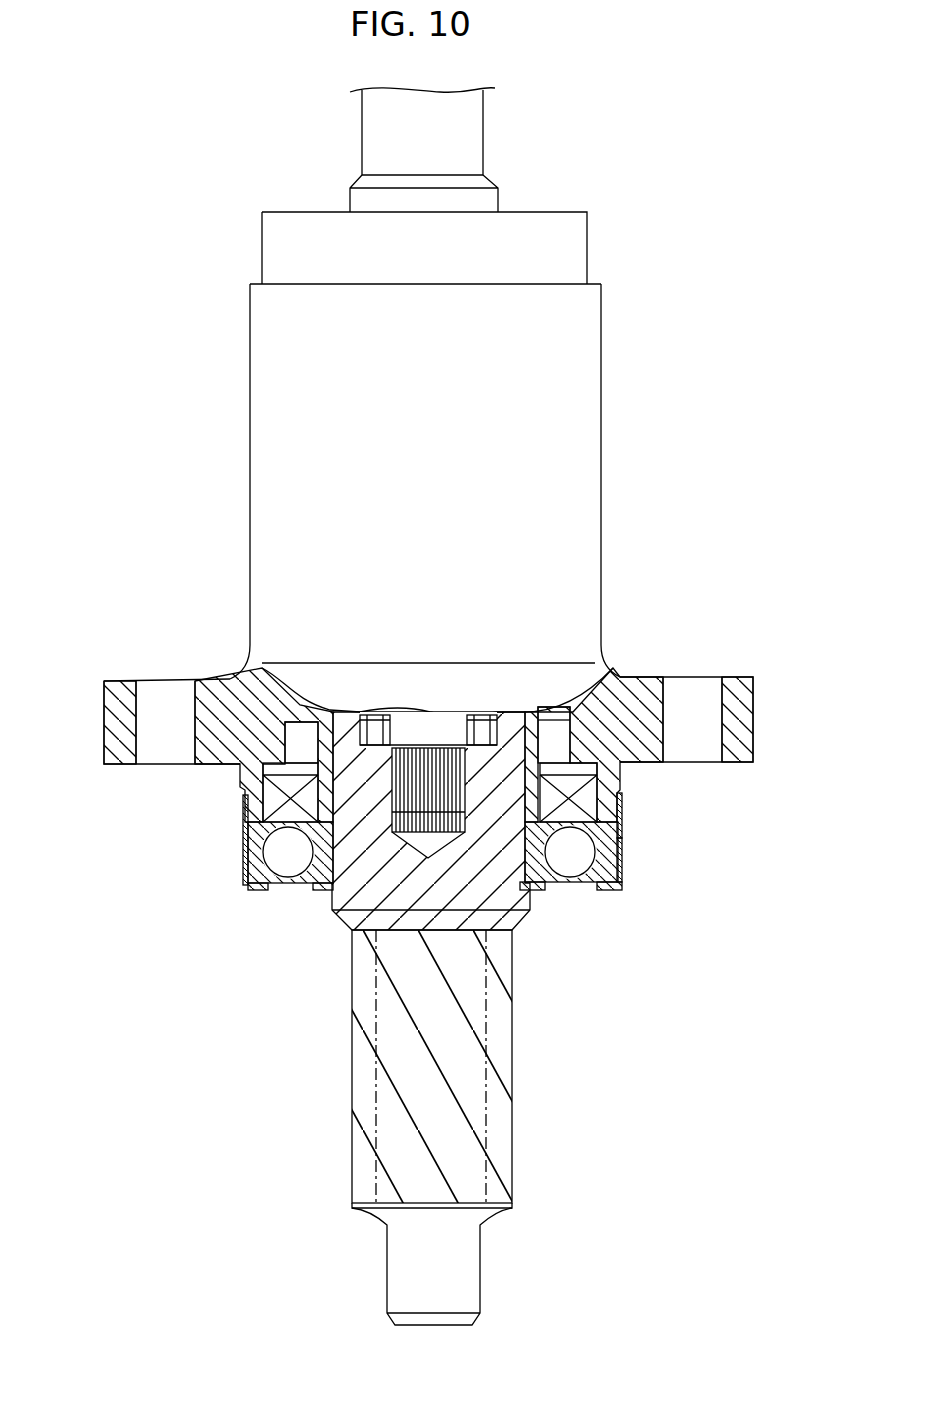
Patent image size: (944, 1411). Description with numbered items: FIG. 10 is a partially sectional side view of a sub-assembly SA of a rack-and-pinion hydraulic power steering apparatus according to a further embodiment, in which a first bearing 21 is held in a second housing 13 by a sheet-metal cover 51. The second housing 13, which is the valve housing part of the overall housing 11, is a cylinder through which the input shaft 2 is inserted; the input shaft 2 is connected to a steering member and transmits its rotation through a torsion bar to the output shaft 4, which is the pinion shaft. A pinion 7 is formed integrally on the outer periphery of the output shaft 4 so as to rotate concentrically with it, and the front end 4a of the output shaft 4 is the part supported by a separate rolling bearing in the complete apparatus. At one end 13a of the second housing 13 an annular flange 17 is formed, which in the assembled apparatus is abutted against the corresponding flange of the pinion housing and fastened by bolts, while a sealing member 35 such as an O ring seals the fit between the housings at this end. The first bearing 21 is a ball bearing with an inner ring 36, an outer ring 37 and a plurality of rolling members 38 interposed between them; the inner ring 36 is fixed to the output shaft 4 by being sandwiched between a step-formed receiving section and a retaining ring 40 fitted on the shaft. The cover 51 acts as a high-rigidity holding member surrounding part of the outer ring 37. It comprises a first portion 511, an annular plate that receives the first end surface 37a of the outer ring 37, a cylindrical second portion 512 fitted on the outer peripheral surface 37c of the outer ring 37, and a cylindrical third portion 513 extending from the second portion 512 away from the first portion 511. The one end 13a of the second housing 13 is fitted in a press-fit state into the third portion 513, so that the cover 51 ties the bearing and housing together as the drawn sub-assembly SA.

The input shaft 2 is at (372, 122).
The housing 11 is at (553, 169).
The second housing 13 is at (567, 246).
The sub-assembly SA is at (663, 373).
The annular flange 17 is at (112, 721).
The one end of the second housing 13a is at (245, 786).
The first bearing 21 is at (265, 841).
The sealing member 35 is at (585, 792).
The outer peripheral surface 37c is at (245, 855).
The outer ring 37 is at (240, 914).
The first end surface 37a is at (258, 888).
The inner ring 36 is at (290, 864).
The rolling members 38 is at (286, 886).
The output shaft 4 is at (335, 926).
The pinion 7 is at (362, 1088).
The front end of the output shaft 4a is at (455, 1268).
The retaining ring 40 is at (532, 890).
The first portion 511 is at (600, 888).
The cover 51 is at (602, 924).
The second portion 512 is at (622, 856).
The third portion 513 is at (622, 813).